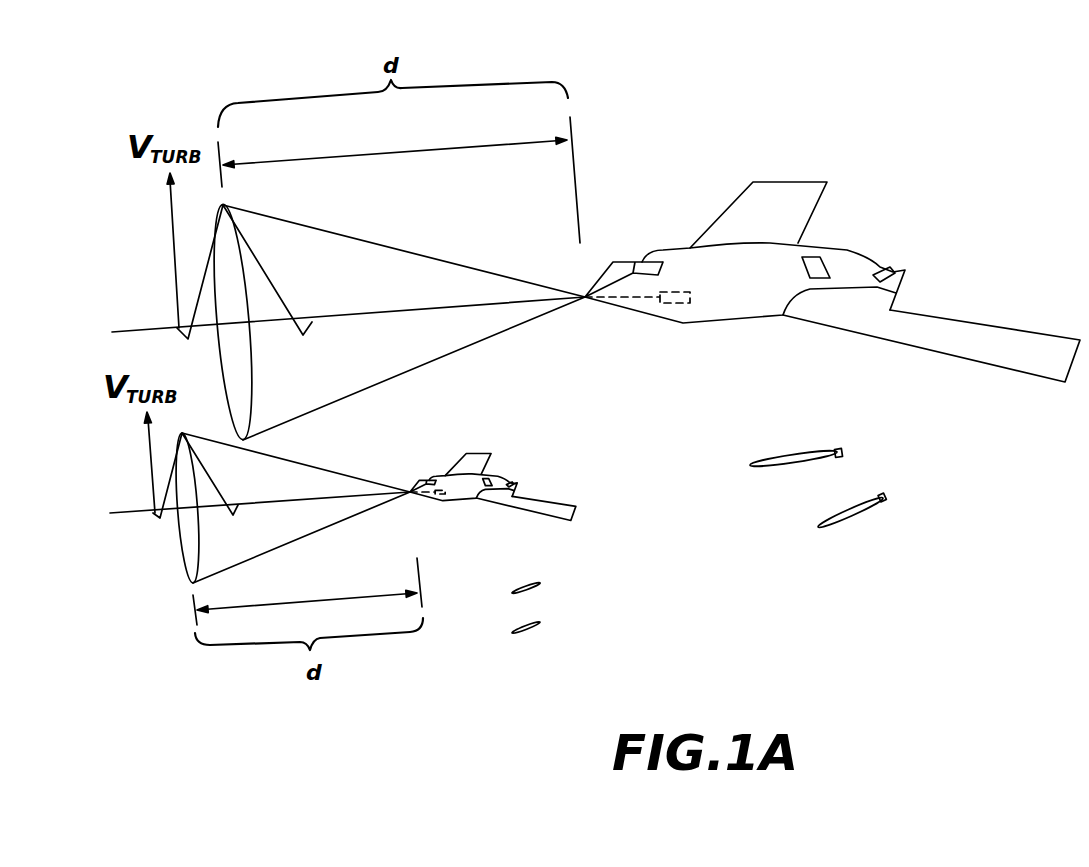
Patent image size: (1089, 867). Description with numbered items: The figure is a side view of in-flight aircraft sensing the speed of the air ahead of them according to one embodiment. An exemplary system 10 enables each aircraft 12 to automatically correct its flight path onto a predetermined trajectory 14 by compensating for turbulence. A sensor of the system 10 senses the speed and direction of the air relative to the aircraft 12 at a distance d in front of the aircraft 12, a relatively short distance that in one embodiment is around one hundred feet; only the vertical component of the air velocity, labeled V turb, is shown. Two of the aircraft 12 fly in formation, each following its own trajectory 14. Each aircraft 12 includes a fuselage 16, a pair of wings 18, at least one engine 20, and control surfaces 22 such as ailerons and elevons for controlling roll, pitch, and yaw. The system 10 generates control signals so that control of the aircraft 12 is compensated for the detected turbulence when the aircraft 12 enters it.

The system 10 is at (665, 305).
The aircraft 12 is at (720, 360).
The predetermined trajectory 14 is at (128, 330).
The fuselage 16 is at (687, 247).
The wings 18 is at (730, 196).
The engine 20 is at (888, 268).
The control surfaces 22 is at (813, 223).